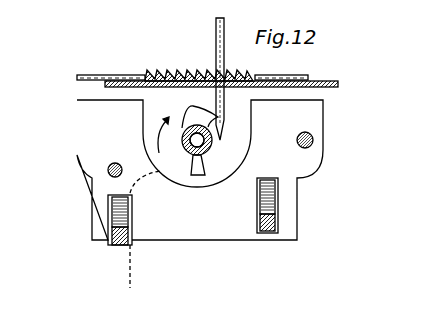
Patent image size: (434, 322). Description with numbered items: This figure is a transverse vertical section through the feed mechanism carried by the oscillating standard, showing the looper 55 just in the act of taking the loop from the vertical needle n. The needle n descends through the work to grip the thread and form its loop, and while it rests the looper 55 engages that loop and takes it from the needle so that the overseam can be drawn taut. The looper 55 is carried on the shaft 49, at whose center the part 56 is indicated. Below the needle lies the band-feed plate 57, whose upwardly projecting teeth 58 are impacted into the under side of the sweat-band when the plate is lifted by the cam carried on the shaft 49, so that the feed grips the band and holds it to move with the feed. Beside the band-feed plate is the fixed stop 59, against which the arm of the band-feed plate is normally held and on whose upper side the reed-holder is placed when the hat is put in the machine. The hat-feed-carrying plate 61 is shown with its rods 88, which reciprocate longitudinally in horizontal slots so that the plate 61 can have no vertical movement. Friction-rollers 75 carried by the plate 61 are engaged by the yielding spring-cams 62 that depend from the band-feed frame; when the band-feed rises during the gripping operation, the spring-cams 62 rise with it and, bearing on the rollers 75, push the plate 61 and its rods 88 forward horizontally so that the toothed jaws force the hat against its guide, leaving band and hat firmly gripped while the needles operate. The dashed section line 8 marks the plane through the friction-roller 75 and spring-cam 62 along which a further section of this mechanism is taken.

The band-feed plate 57 is at (340, 83).
The teeth of the band-feed plate 58 is at (160, 75).
The fixed stop 59 is at (306, 76).
The vertical needle n is at (224, 57).
The looper 55 is at (188, 108).
The pivot pin 56 is at (204, 139).
The shaft 49 is at (211, 149).
The hat-feed-carrying plate 61 is at (77, 127).
The rods 88 is at (115, 162).
The friction-rollers 75 is at (122, 208).
The spring-cams 62 is at (132, 231).
The axis line 8 is at (147, 232).